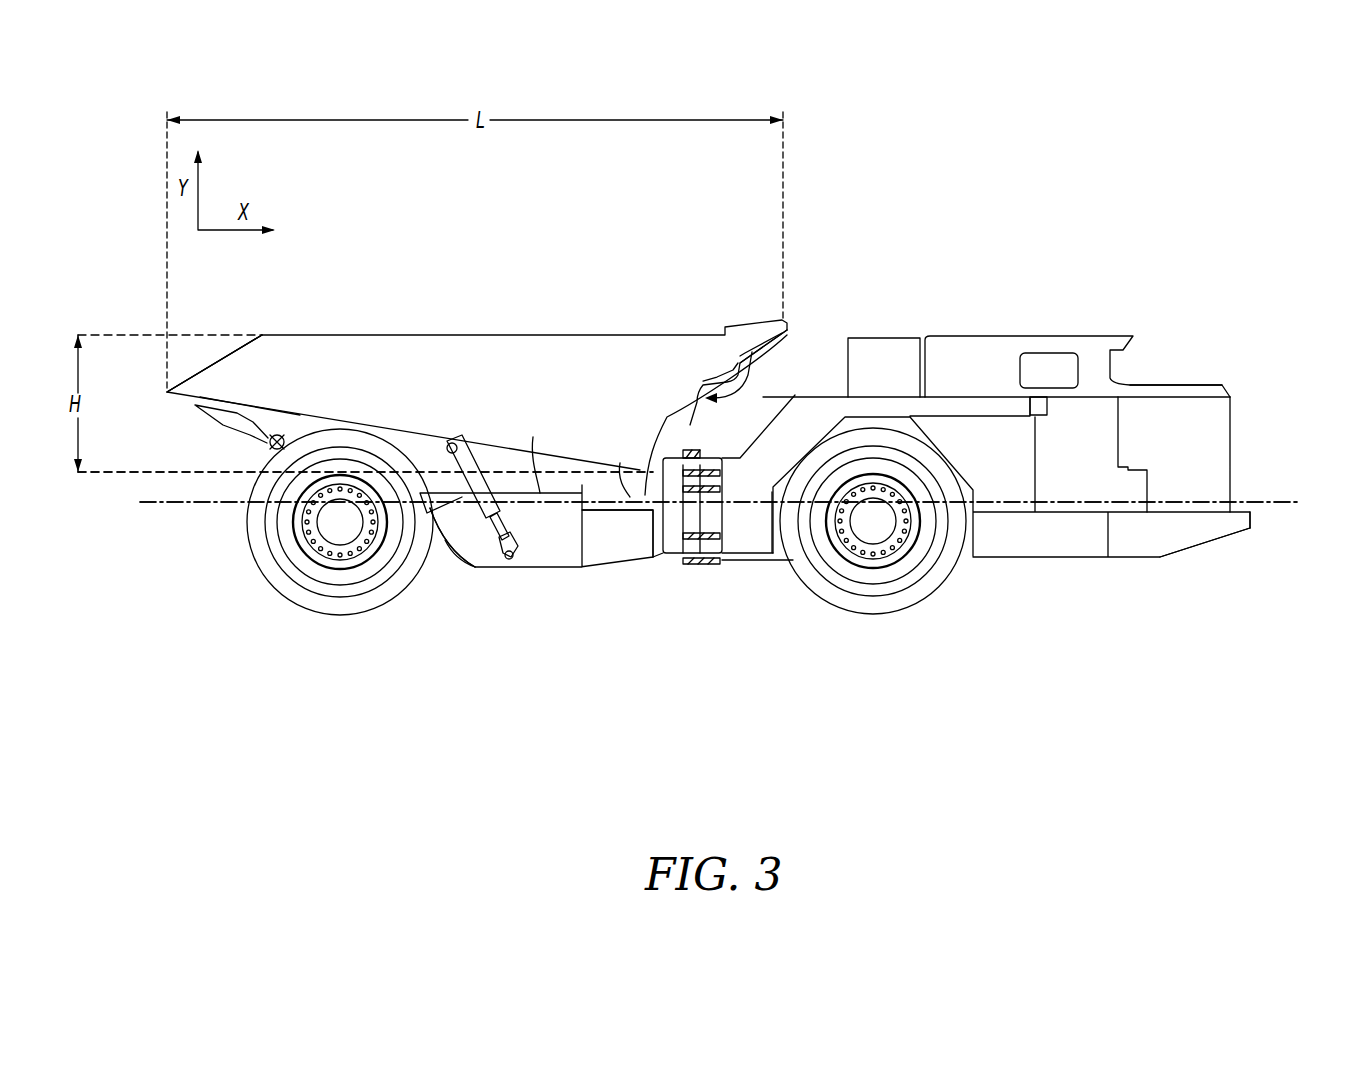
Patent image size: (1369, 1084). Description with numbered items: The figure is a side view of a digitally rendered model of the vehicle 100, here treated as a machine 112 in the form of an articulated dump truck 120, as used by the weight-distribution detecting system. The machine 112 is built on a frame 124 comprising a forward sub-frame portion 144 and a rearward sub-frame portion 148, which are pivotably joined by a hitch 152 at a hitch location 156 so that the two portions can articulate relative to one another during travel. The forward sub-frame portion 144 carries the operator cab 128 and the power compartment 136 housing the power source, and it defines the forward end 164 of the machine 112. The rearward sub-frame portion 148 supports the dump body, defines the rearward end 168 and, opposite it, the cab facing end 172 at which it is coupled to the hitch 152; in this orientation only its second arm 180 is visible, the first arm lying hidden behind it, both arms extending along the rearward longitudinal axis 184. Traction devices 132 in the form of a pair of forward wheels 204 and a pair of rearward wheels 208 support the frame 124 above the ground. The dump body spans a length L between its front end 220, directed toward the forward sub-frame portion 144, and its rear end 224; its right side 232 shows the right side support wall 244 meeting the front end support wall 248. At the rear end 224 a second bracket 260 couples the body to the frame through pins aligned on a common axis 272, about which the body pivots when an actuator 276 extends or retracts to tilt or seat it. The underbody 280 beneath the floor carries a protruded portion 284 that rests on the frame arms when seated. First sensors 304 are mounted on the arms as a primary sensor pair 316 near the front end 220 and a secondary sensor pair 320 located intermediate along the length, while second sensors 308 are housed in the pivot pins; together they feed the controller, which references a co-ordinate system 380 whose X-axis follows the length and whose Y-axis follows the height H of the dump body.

The vehicle 100 is at (1228, 222).
The machine 112 is at (1193, 282).
The articulated dump truck 120 is at (157, 202).
The frame 124 is at (1080, 565).
The operator cab 128 is at (1058, 335).
The traction devices 132 is at (580, 523).
The power compartment 136 is at (1198, 383).
The forward sub-frame portion 144 is at (1185, 548).
The rearward sub-frame portion 148 is at (543, 570).
The hitch 152 is at (713, 587).
The hitch location 156 is at (695, 572).
The forward end 164 is at (1248, 520).
The rearward end 168 is at (247, 464).
The cab facing end 172 is at (657, 558).
The second arm 180 is at (460, 563).
The rearward longitudinal axis 184 is at (142, 505).
The forward wheels 204 is at (790, 570).
The rearward wheels 208 is at (257, 567).
The front end 220 is at (723, 457).
The rear end 224 is at (162, 380).
The right side 232 is at (399, 362).
The right side support wall 244 is at (262, 335).
The front end support wall 248 is at (653, 488).
The second bracket 260 is at (247, 438).
The common axis 272 is at (293, 418).
The actuator 276 is at (450, 543).
The underbody 280 is at (505, 463).
The protruded portion 284 is at (582, 550).
The first sensors 304 is at (647, 365).
The second sensors 308 is at (268, 443).
The primary sensor pair 316 is at (620, 463).
The secondary sensor pair 320 is at (533, 437).
The co-ordinate system 380 is at (273, 178).